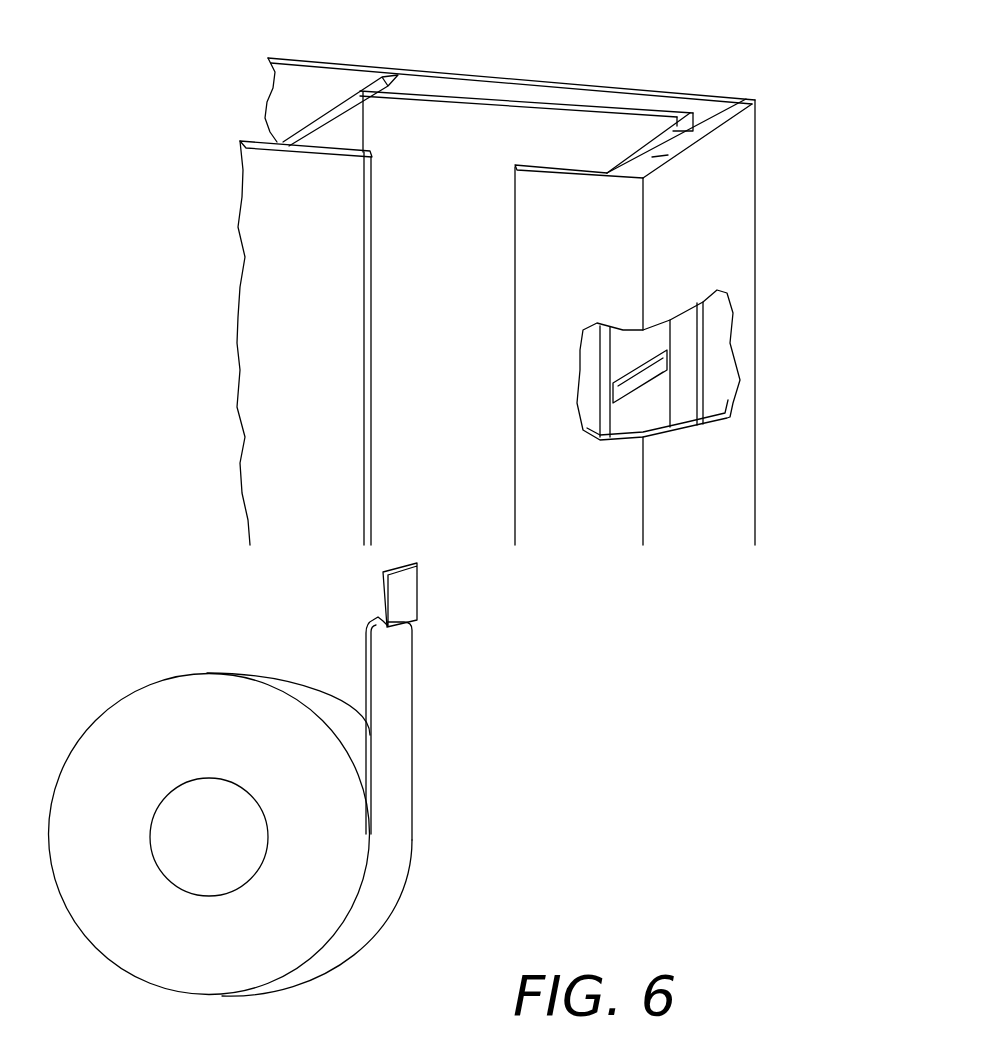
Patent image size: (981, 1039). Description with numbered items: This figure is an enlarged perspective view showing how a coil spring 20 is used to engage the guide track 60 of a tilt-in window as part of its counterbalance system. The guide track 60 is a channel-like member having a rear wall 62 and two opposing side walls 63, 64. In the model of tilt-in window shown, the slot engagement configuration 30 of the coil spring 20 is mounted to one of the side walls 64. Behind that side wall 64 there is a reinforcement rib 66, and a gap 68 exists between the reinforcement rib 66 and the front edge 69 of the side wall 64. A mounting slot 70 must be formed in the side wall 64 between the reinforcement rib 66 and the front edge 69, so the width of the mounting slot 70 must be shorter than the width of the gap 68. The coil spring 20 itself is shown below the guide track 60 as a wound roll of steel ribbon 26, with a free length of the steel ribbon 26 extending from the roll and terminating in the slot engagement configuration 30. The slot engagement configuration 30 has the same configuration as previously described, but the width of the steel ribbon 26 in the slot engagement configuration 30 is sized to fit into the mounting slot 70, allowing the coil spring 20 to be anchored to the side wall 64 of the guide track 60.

The coil spring 20 is at (200, 702).
The steel ribbon 26 is at (395, 738).
The slot engagement configuration 30 is at (435, 560).
The guide track 60 is at (465, 165).
The rear wall 62 is at (503, 148).
The side wall 63 is at (327, 121).
The side wall 64 is at (641, 138).
The reinforcement rib 66 is at (683, 140).
The gap 68 is at (667, 143).
The front edge 69 is at (625, 177).
The mounting slot 70 is at (650, 367).